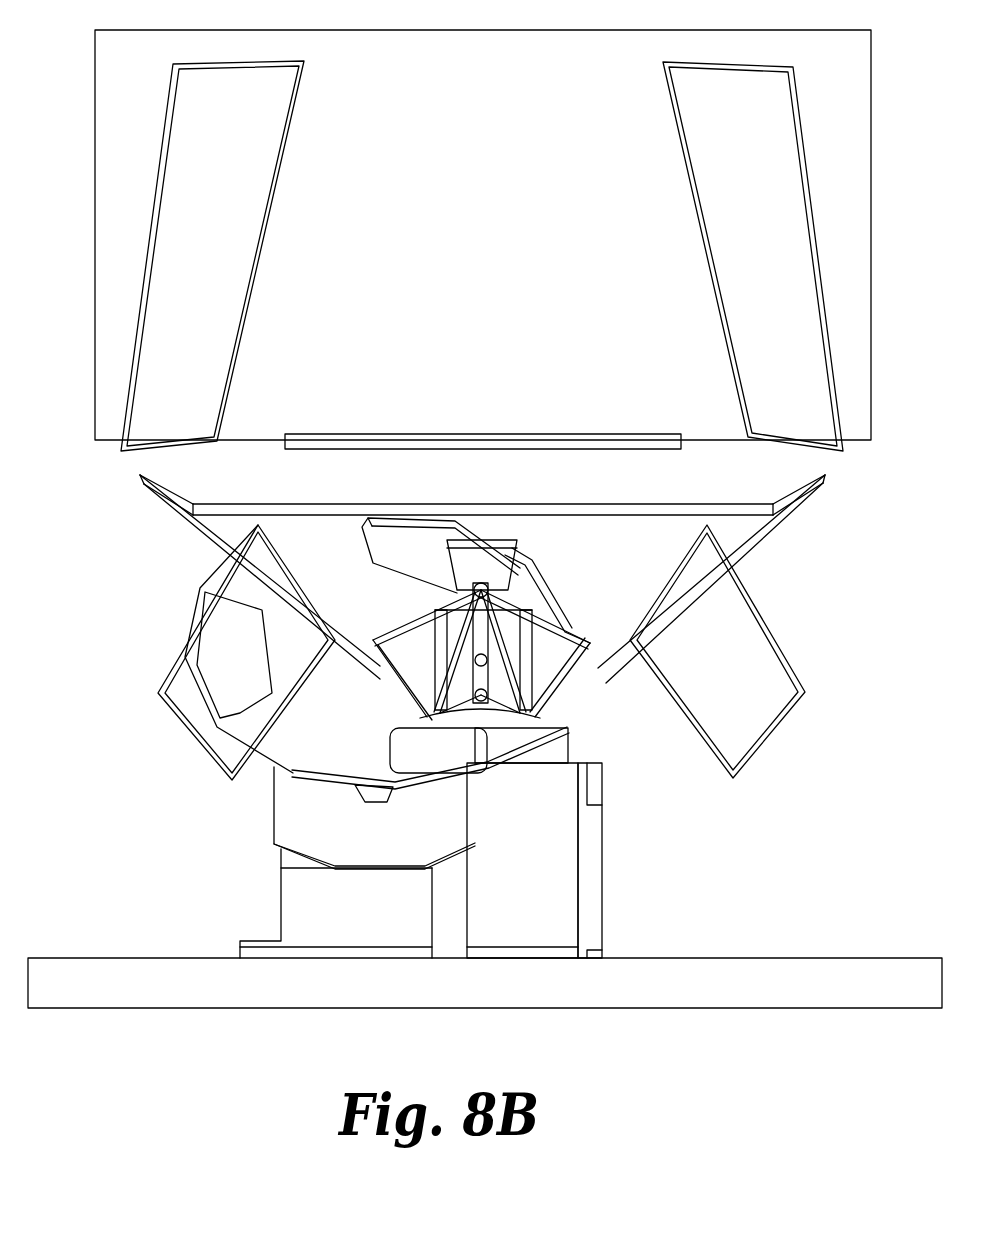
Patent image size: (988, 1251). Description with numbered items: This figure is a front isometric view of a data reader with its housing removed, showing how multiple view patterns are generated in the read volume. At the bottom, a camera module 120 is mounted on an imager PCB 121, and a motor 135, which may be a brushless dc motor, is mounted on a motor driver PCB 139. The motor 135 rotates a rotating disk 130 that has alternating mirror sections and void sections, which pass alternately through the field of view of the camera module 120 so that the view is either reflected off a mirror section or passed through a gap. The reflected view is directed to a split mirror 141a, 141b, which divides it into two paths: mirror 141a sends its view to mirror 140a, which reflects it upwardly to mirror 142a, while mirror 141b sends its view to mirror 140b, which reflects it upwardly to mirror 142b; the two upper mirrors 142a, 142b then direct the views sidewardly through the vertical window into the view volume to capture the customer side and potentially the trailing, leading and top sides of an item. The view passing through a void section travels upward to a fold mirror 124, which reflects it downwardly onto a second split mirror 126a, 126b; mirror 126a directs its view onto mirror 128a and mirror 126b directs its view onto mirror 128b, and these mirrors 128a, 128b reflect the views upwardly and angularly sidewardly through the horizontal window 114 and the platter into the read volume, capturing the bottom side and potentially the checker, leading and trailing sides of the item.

The horizontal window 114 is at (663, 503).
The camera module 120 is at (550, 880).
The imager PCB 121 is at (525, 953).
The fold mirror 124 is at (503, 538).
The split mirror section 126a is at (402, 618).
The split mirror section 126b is at (583, 623).
The mirror 128a is at (177, 713).
The mirror 128b is at (770, 740).
The rotating disk 130 is at (353, 753).
The motor 135 is at (308, 908).
The motor driver PCB 139 is at (362, 953).
The mirror 140a is at (180, 520).
The mirror 140b is at (760, 543).
The split mirror section 141a is at (433, 653).
The split mirror section 141b is at (530, 663).
The mirror 142a is at (235, 202).
The mirror 142b is at (720, 228).